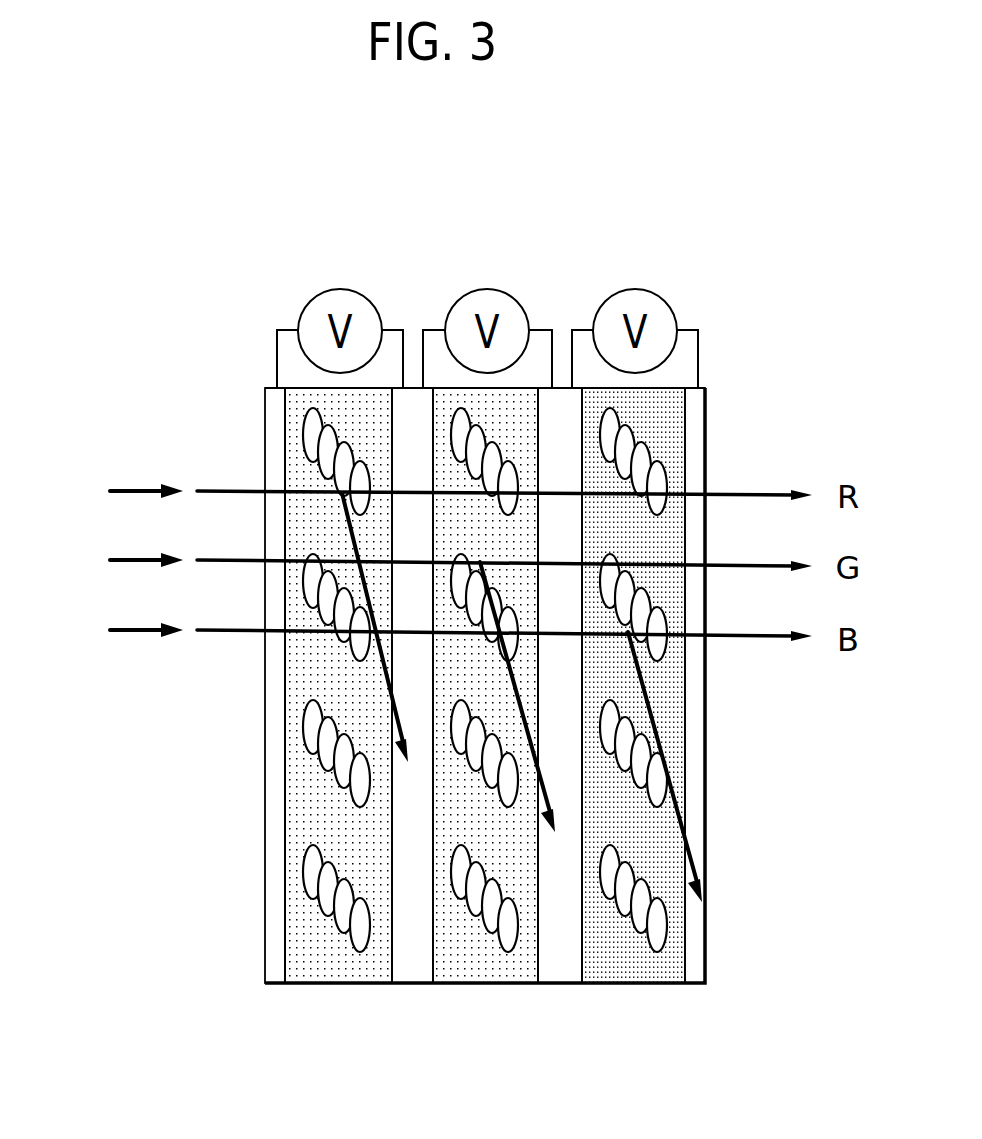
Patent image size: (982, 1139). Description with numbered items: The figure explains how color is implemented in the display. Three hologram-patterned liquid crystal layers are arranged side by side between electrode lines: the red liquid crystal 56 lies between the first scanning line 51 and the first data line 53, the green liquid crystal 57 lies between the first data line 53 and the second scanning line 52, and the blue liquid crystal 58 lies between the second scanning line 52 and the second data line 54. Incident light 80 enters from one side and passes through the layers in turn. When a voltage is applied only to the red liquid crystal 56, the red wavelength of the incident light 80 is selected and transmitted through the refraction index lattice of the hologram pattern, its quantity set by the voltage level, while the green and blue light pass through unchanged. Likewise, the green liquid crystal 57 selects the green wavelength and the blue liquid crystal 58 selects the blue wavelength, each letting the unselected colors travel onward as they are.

The first scanning line 51 is at (270, 983).
The second scanning line 52 is at (555, 983).
The first data line 53 is at (405, 983).
The second data line 54 is at (700, 955).
The red liquid crystal 56 is at (312, 983).
The green liquid crystal 57 is at (460, 983).
The blue liquid crystal 58 is at (630, 983).
The incident light 80 is at (92, 491).